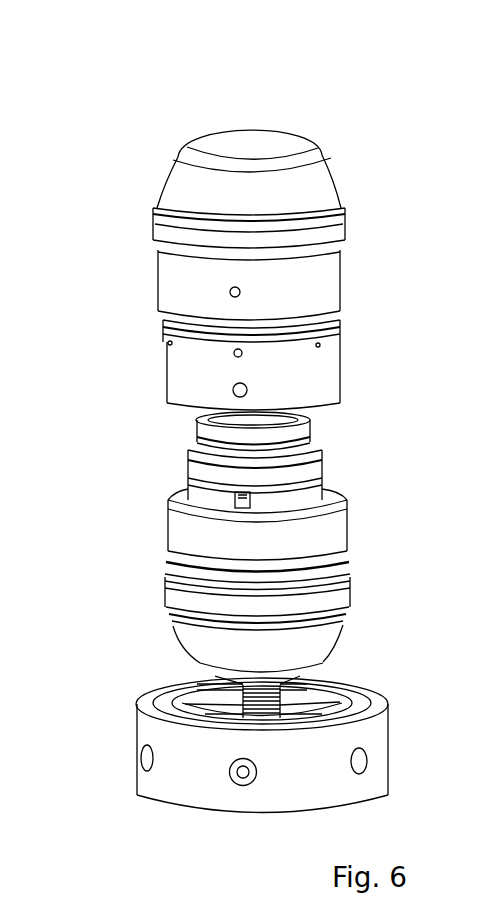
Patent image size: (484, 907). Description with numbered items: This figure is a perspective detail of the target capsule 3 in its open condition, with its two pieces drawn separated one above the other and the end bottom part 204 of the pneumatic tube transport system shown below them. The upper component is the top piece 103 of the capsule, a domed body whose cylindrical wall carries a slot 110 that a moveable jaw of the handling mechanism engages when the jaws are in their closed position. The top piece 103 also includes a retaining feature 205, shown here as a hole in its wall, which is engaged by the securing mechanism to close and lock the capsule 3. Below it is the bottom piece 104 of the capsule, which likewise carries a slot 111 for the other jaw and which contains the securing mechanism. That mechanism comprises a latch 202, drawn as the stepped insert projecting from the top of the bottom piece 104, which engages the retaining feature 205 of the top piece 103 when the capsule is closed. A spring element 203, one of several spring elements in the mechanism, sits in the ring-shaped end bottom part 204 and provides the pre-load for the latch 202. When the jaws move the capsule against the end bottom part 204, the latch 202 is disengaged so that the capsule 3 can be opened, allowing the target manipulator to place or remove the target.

The target capsule 3 is at (317, 117).
The top piece 103 is at (152, 289).
The slot 110 is at (333, 313).
The retaining feature 205 is at (247, 390).
The latch 202 is at (182, 488).
The bottom piece 104 is at (148, 548).
The slot 111 is at (346, 556).
The spring element 203 is at (340, 700).
The end bottom part 204 is at (383, 757).